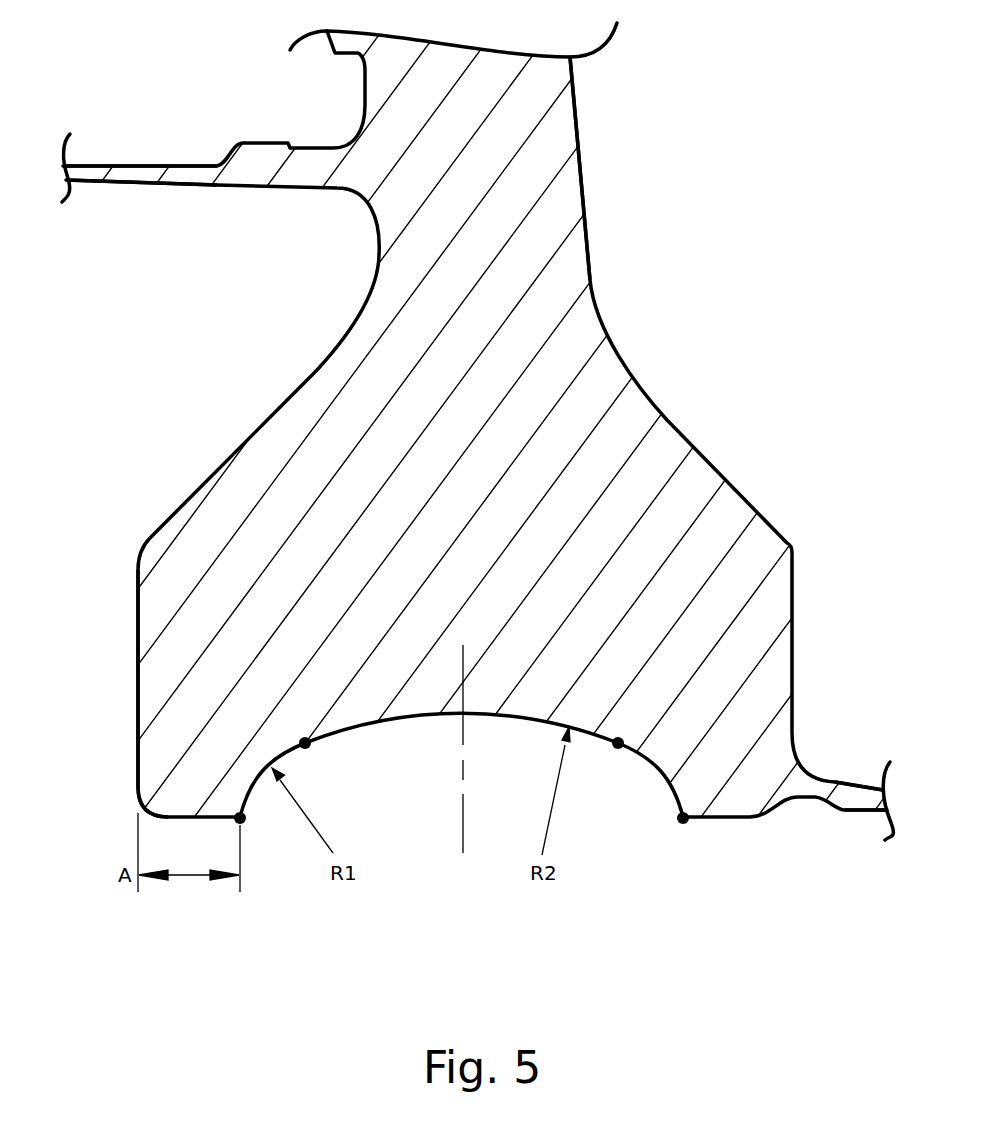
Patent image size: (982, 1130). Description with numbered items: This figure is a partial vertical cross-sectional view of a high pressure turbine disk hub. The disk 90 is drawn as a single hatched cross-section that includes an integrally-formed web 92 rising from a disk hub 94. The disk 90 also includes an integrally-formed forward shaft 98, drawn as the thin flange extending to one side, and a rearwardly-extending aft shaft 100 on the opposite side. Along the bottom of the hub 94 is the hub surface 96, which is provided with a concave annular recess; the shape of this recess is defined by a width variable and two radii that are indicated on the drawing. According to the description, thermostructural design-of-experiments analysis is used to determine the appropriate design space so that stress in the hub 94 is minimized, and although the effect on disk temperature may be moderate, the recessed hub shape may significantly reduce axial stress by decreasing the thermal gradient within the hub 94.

The disk 90 is at (184, 420).
The web 92 is at (548, 146).
The disk hub 94 is at (173, 605).
The hub surface 96 is at (167, 806).
The forward shaft 98 is at (130, 171).
The aft shaft 100 is at (850, 800).